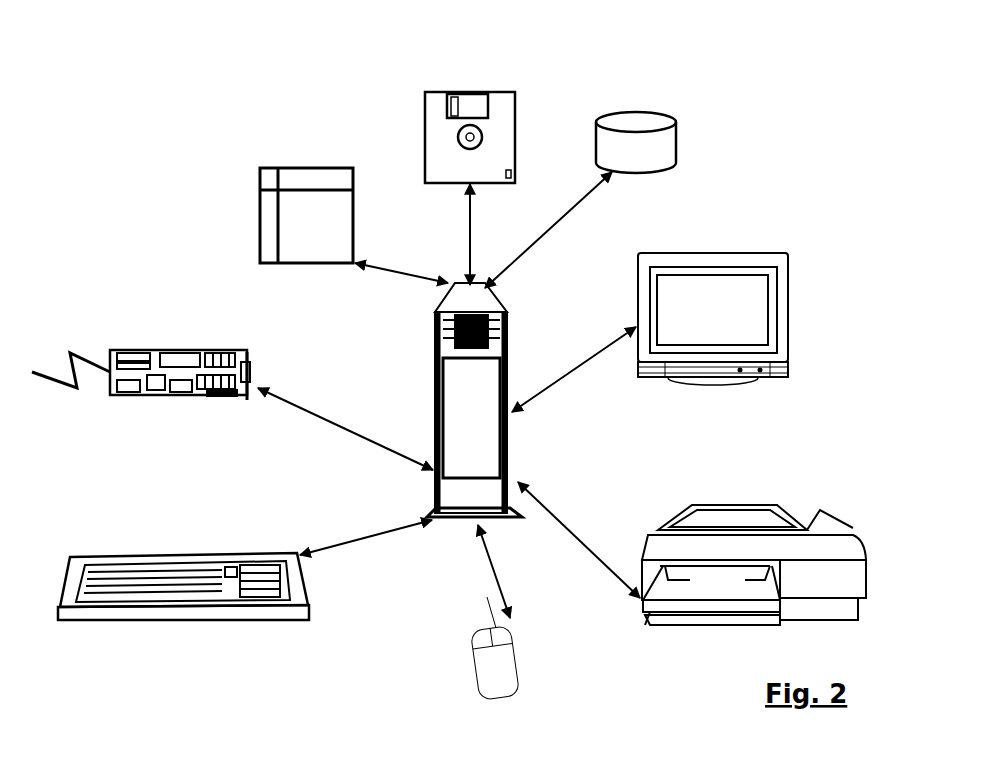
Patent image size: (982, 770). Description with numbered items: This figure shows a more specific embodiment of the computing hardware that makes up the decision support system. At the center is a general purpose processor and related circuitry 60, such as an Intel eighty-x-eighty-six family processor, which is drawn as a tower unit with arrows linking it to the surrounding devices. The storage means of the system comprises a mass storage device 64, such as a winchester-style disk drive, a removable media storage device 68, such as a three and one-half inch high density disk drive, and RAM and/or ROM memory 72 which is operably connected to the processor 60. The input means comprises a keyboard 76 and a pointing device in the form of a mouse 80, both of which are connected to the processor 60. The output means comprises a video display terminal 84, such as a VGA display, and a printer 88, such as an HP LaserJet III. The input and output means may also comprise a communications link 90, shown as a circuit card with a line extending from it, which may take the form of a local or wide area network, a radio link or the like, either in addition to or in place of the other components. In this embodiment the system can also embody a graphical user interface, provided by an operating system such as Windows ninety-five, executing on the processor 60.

The general purpose processor and related circuitry 60 is at (515, 372).
The mass storage device 64 is at (682, 150).
The removable media storage device 68 is at (518, 92).
The RAM and/or ROM memory 72 is at (258, 218).
The keyboard 76 is at (185, 625).
The mouse 80 is at (502, 702).
The video display terminal 84 is at (792, 325).
The printer 88 is at (865, 545).
The communications link 90 is at (185, 408).